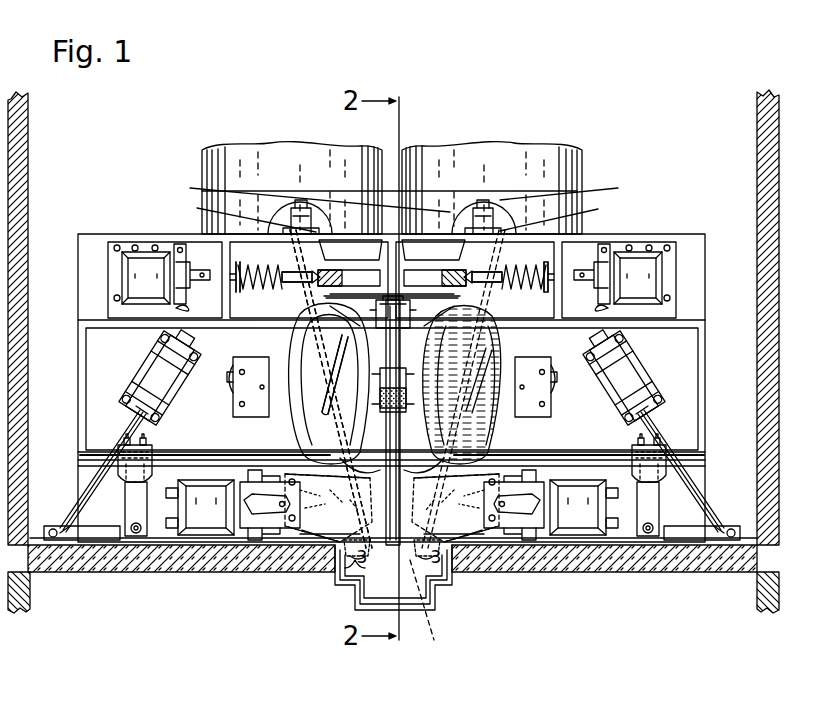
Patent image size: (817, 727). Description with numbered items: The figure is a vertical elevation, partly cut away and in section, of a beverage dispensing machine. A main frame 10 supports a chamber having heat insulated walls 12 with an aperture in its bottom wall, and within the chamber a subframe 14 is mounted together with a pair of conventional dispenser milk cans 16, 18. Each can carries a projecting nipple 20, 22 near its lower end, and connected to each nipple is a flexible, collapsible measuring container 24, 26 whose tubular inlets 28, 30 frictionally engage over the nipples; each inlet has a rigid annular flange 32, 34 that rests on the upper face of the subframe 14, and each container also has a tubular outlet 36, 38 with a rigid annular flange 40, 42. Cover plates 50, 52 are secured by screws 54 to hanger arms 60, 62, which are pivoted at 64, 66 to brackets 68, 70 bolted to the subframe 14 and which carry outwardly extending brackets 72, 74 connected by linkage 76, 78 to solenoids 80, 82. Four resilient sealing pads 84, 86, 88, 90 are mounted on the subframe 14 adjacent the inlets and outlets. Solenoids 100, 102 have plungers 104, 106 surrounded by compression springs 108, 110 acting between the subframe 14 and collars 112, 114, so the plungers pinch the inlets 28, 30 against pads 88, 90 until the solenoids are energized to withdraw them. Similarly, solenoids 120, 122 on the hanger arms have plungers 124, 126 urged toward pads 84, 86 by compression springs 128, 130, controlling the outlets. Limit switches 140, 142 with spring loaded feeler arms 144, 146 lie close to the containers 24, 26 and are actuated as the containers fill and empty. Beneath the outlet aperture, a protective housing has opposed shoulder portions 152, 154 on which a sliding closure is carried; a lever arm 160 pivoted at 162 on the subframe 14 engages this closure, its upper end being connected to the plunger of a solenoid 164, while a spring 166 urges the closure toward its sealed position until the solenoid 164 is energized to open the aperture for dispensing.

The main frame 10 is at (26, 594).
The heat insulated wall 12 is at (760, 336).
The subframe 14 is at (86, 272).
The dispenser milk can 16 is at (203, 160).
The dispenser milk can 18 is at (578, 163).
The projecting nipple 20 is at (301, 195).
The projecting nipple 22 is at (573, 188).
The flexible collapsible measuring container 24 is at (326, 320).
The flexible collapsible measuring container 26 is at (474, 340).
The tubular inlet 28 is at (243, 214).
The tubular inlet 30 is at (480, 221).
The annular flange 32 is at (311, 222).
The annular flange 34 is at (562, 214).
The tubular outlet 36 is at (354, 550).
The tubular outlet 38 is at (422, 556).
The annular flange 40 is at (345, 566).
The annular flange 42 is at (429, 609).
The cover plate 50 is at (290, 520).
The cover plate 52 is at (466, 518).
The screw 54 is at (282, 506).
The hanger arm 60 is at (258, 462).
The hanger arm 62 is at (550, 462).
The pivot 64 is at (140, 528).
The pivot 66 is at (654, 538).
The bracket 68 is at (150, 454).
The bracket 70 is at (640, 450).
The outwardly extending bracket 72 is at (80, 533).
The outwardly extending bracket 74 is at (718, 514).
The linkage 76 is at (68, 506).
The linkage 78 is at (700, 474).
The solenoid 80 is at (142, 368).
The solenoid 82 is at (642, 368).
The resilient stop or sealing pad 84 is at (372, 462).
The resilient stop or sealing pad 86 is at (492, 458).
The resilient stop or sealing pad 88 is at (330, 270).
The resilient stop or sealing pad 90 is at (456, 270).
The solenoid 100 is at (134, 262).
The solenoid 102 is at (648, 262).
The plunger 104 is at (285, 270).
The plunger 106 is at (498, 268).
The compression spring 108 is at (248, 268).
The compression spring 110 is at (546, 266).
The collar 112 is at (252, 290).
The collar 114 is at (496, 288).
The solenoid 120 is at (206, 510).
The solenoid 122 is at (588, 512).
The plunger 124 is at (312, 520).
The plunger 126 is at (542, 522).
The compression spring 128 is at (250, 604).
The compression spring 130 is at (489, 389).
The limit switch 140 is at (232, 380).
The limit switch 142 is at (556, 380).
The spring loaded feeler arm 144 is at (322, 390).
The spring loaded feeler arm 146 is at (476, 396).
The shoulder portion 152 is at (450, 590).
The shoulder portion 154 is at (350, 588).
The lever arm 160 is at (382, 346).
The pivot 162 is at (378, 392).
The solenoid 164 is at (403, 312).
The spring 166 is at (402, 330).